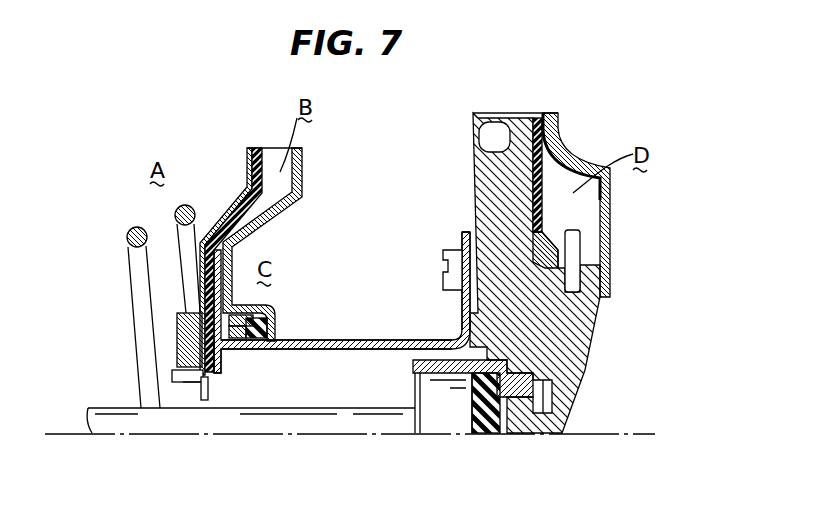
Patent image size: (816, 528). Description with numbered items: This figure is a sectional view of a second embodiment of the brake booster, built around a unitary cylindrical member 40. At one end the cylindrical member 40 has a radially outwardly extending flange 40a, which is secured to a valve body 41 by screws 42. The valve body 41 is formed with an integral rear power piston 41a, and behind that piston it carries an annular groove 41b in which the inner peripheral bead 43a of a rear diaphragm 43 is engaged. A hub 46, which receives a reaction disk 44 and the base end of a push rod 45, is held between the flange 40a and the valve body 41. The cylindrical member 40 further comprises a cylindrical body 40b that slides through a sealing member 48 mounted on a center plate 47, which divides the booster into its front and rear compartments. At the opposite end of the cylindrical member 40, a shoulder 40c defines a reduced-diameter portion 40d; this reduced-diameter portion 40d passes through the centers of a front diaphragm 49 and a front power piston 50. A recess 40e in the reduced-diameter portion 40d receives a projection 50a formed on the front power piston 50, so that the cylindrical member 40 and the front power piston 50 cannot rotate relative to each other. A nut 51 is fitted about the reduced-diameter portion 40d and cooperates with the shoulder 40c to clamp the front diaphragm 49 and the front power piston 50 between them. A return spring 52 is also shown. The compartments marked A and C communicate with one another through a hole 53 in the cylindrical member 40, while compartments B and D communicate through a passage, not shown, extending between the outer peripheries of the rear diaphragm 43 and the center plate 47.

The cylindrical member 40 is at (313, 333).
The flange 40a is at (463, 232).
The cylindrical body 40b is at (373, 340).
The shoulder 40c is at (213, 364).
The reduced-diameter portion 40d is at (172, 378).
The recess 40e is at (183, 378).
The valve body 41 is at (584, 368).
The rear power piston 41a is at (510, 162).
The annular groove 41b is at (582, 233).
The screws 42 is at (443, 268).
The rear diaphragm 43 is at (550, 175).
The inner peripheral bead 43a is at (560, 260).
The reaction disk 44 is at (489, 434).
The push rod 45 is at (331, 421).
The hub 46 is at (438, 372).
The center plate 47 is at (302, 167).
The sealing member 48 is at (282, 350).
The front diaphragm 49 is at (277, 173).
The front power piston 50 is at (247, 170).
The projection 50a is at (210, 398).
The nut 51 is at (177, 322).
The return spring 52 is at (132, 230).
The hole 53 is at (440, 340).